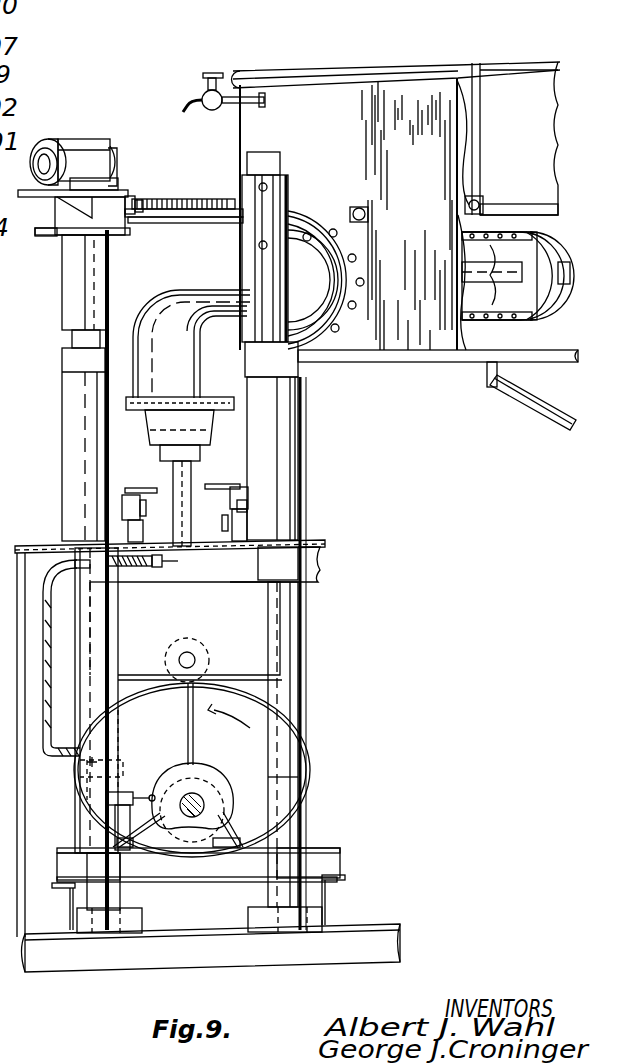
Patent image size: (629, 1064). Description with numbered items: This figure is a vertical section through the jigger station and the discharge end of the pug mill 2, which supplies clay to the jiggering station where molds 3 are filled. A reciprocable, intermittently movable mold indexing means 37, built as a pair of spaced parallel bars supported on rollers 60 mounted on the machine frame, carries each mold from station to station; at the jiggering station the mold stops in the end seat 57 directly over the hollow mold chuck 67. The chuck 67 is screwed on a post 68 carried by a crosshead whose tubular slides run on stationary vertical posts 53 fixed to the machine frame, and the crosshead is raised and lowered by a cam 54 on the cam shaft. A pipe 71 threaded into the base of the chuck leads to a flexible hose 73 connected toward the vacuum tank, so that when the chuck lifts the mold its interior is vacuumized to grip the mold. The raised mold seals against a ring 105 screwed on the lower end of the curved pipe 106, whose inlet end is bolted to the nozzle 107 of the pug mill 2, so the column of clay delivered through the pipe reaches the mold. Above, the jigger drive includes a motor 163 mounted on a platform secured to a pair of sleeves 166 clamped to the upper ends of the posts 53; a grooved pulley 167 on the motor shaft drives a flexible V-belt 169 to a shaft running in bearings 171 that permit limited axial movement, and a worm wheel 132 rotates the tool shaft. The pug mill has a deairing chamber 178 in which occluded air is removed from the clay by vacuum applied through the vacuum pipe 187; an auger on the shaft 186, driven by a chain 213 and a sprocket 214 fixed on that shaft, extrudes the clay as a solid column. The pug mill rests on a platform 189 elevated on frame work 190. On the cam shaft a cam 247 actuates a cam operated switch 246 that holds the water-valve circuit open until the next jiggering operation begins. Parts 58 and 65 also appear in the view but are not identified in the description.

The pug mill 2 is at (516, 88).
The molds 3 is at (127, 410).
The mold indexing means 37 is at (265, 508).
The vertical posts 53 is at (72, 340).
The cam 54 is at (306, 768).
The end seat 57 is at (145, 490).
The lower switch 58 is at (250, 503).
The rollers 60 is at (125, 530).
The bracket 65 is at (45, 236).
The hollow mold chuck 67 is at (205, 430).
The post 68 is at (200, 455).
The pipe 71 is at (192, 473).
The flexible hose 73 is at (140, 572).
The ring 105 is at (240, 402).
The curved pipe 106 is at (318, 208).
The nozzle 107 is at (335, 212).
The worm wheel 132 is at (195, 199).
The motor 163 is at (86, 138).
The sleeves 166 is at (60, 302).
The grooved pulley 167 is at (110, 158).
The flexible V-belt 169 is at (130, 196).
The bearings 171 is at (141, 200).
The deairing chamber 178 is at (398, 85).
The shaft 186 is at (466, 276).
The vacuum pipe 187 is at (187, 98).
The platform 189 is at (440, 350).
The frame work 190 is at (520, 410).
The chain 213 is at (494, 320).
The sprocket 214 is at (528, 290).
The cam operated switch 246 is at (125, 792).
The cam 247 is at (222, 770).